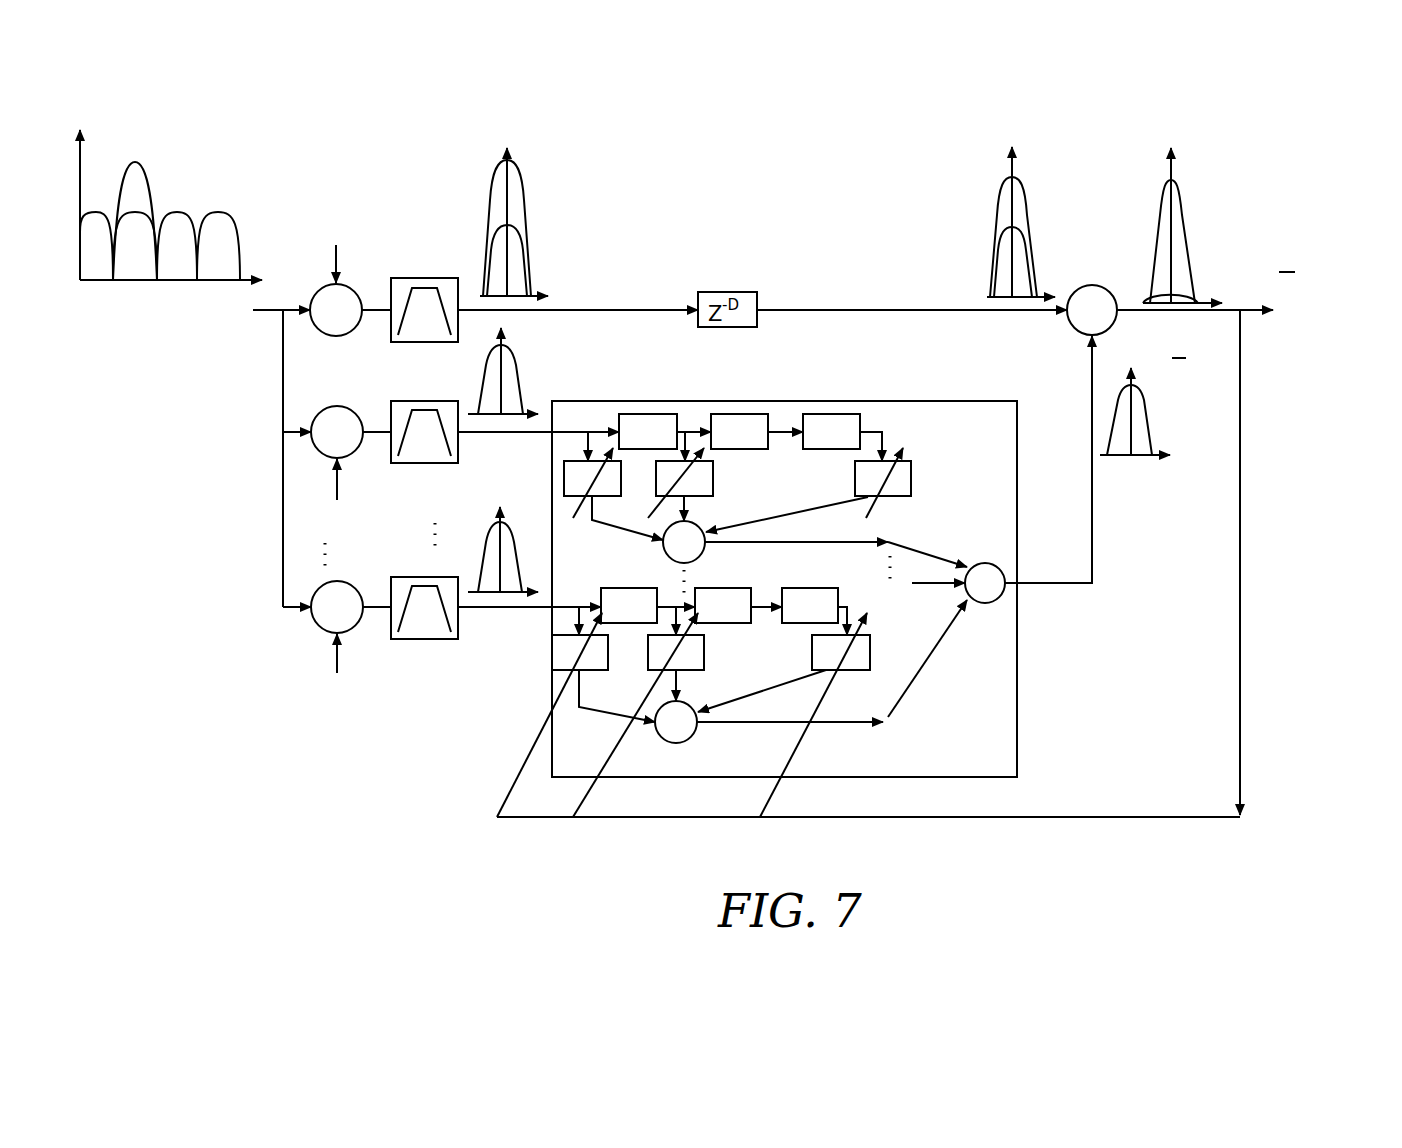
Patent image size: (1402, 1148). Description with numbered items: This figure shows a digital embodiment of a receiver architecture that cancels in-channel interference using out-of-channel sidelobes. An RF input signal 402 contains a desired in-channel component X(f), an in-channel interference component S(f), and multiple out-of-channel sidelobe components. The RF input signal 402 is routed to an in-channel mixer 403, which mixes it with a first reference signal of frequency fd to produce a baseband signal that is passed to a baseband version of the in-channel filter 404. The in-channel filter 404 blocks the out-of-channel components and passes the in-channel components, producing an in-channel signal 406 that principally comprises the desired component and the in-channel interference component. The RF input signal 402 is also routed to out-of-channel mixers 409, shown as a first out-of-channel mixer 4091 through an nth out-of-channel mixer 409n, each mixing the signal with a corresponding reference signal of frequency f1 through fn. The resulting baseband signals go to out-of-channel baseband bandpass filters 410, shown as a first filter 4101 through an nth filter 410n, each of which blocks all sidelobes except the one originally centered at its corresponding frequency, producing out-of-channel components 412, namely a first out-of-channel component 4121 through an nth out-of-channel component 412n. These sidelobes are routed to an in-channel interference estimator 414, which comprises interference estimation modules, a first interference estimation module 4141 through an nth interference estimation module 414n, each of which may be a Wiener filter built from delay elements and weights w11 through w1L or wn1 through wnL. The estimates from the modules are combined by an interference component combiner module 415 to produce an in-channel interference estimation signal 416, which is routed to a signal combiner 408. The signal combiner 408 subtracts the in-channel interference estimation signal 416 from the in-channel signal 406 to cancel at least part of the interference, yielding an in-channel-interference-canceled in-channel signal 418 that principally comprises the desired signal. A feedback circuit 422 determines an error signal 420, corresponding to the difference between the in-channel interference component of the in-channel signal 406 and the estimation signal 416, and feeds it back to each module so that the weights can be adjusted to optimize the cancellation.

The RF input signal 402 is at (209, 195).
The in-channel mixer 403 is at (348, 294).
The in-channel filter 404 is at (418, 291).
The in-channel signal 406 is at (579, 225).
The signal combiner 408 is at (1106, 302).
The out-of-channel mixers 409 is at (319, 542).
The first out-of-channel mixer 4091 is at (289, 455).
The nth out-of-channel mixer 409n is at (367, 622).
The out-of-channel baseband bandpass filters 410 is at (422, 535).
The first out-of-channel baseband bandpass filter 4101 is at (422, 412).
The nth out-of-channel baseband bandpass filter 410n is at (410, 643).
The out-of-channel components 412 is at (518, 463).
The first out-of-channel component 4121 is at (564, 372).
The nth out-of-channel component 412n is at (462, 530).
The in-channel interference estimator 414 is at (740, 590).
The first interference estimation module 4141 is at (740, 490).
The nth interference estimation module 414n is at (720, 702).
The interference component combiner module 415 is at (1002, 469).
The in-channel interference estimation signal 416 is at (1210, 406).
The in-channel-interference-canceled in-channel signal 418 is at (1163, 214).
The error signal 420 is at (1261, 225).
The feedback circuit 422 is at (924, 563).